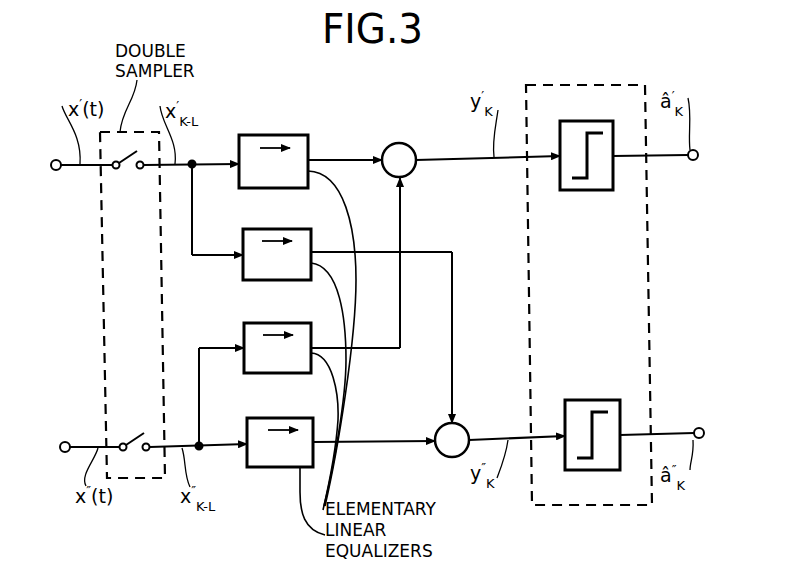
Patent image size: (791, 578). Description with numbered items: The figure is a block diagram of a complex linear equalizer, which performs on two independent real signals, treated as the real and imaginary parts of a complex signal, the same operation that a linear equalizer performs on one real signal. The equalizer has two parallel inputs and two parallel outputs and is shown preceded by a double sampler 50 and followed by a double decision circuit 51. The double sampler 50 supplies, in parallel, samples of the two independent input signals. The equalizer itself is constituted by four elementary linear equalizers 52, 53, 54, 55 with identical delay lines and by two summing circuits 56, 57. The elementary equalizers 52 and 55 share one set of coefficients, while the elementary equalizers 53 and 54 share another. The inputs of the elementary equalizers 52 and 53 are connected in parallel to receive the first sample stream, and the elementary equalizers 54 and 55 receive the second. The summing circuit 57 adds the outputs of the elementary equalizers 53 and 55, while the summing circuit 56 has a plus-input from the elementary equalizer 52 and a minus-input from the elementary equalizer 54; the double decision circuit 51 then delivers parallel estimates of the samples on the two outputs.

The double sampler 50 is at (134, 327).
The double decision circuit 51 is at (612, 251).
The elementary linear equalizer 52 is at (295, 140).
The elementary linear equalizer 53 is at (300, 233).
The elementary linear equalizer 54 is at (302, 326).
The elementary linear equalizer 55 is at (300, 420).
The summing circuit 56 is at (398, 143).
The summing circuit 57 is at (441, 457).